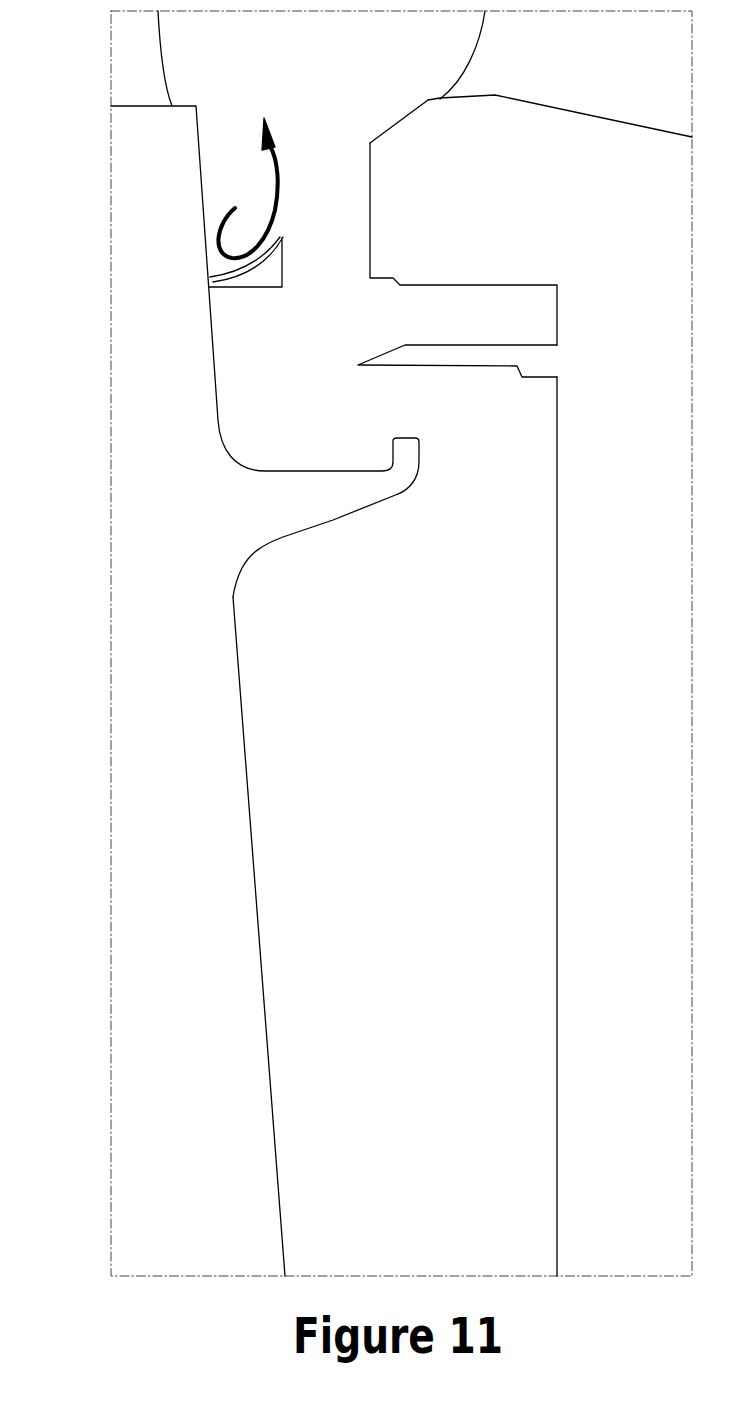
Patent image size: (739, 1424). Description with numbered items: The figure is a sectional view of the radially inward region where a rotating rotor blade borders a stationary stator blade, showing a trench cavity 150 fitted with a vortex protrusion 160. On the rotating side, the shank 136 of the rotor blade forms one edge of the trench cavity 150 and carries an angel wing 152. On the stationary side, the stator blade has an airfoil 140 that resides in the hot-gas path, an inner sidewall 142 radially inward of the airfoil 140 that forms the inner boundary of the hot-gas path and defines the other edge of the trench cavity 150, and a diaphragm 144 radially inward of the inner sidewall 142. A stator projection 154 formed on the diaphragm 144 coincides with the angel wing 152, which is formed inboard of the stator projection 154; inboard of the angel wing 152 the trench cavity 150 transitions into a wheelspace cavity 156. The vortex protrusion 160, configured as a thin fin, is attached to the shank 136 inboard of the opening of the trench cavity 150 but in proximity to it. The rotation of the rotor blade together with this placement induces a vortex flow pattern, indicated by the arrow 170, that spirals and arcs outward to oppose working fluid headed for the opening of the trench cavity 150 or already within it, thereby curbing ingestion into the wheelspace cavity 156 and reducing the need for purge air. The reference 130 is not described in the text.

The sealing assembly 130 is at (135, 62).
The shank 136 is at (191, 560).
The airfoil 140 is at (622, 82).
The inner sidewall 142 is at (587, 193).
The diaphragm 144 is at (648, 746).
The trench cavity 150 is at (368, 103).
The angel wing 152 is at (333, 520).
The stator projection 154 is at (463, 367).
The wheelspace cavity 156 is at (384, 876).
The vortex protrusion 160 is at (283, 240).
The arrow 170 is at (279, 178).